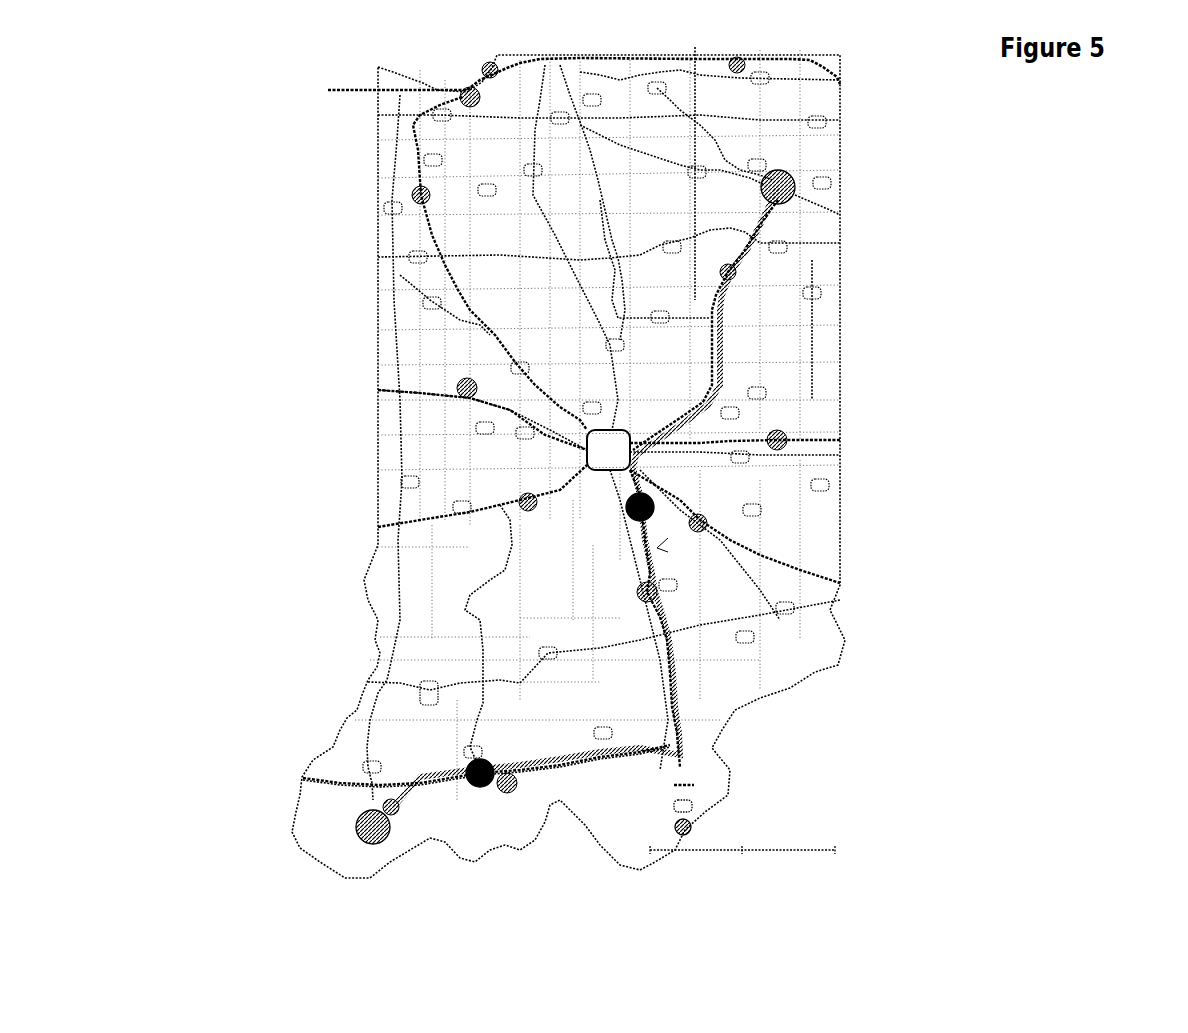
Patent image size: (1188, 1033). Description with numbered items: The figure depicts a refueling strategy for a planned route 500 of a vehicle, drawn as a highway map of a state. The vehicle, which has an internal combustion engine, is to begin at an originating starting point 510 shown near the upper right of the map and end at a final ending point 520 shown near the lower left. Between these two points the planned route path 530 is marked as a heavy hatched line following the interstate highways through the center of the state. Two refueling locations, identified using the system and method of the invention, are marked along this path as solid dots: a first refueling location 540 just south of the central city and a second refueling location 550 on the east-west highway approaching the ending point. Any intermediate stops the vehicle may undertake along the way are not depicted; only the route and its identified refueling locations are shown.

The planned route 500 is at (658, 462).
The starting point 510 is at (795, 182).
The ending point 520 is at (366, 806).
The planned route path 530 is at (660, 540).
The refueling location 540 is at (652, 497).
The refueling location 550 is at (494, 763).